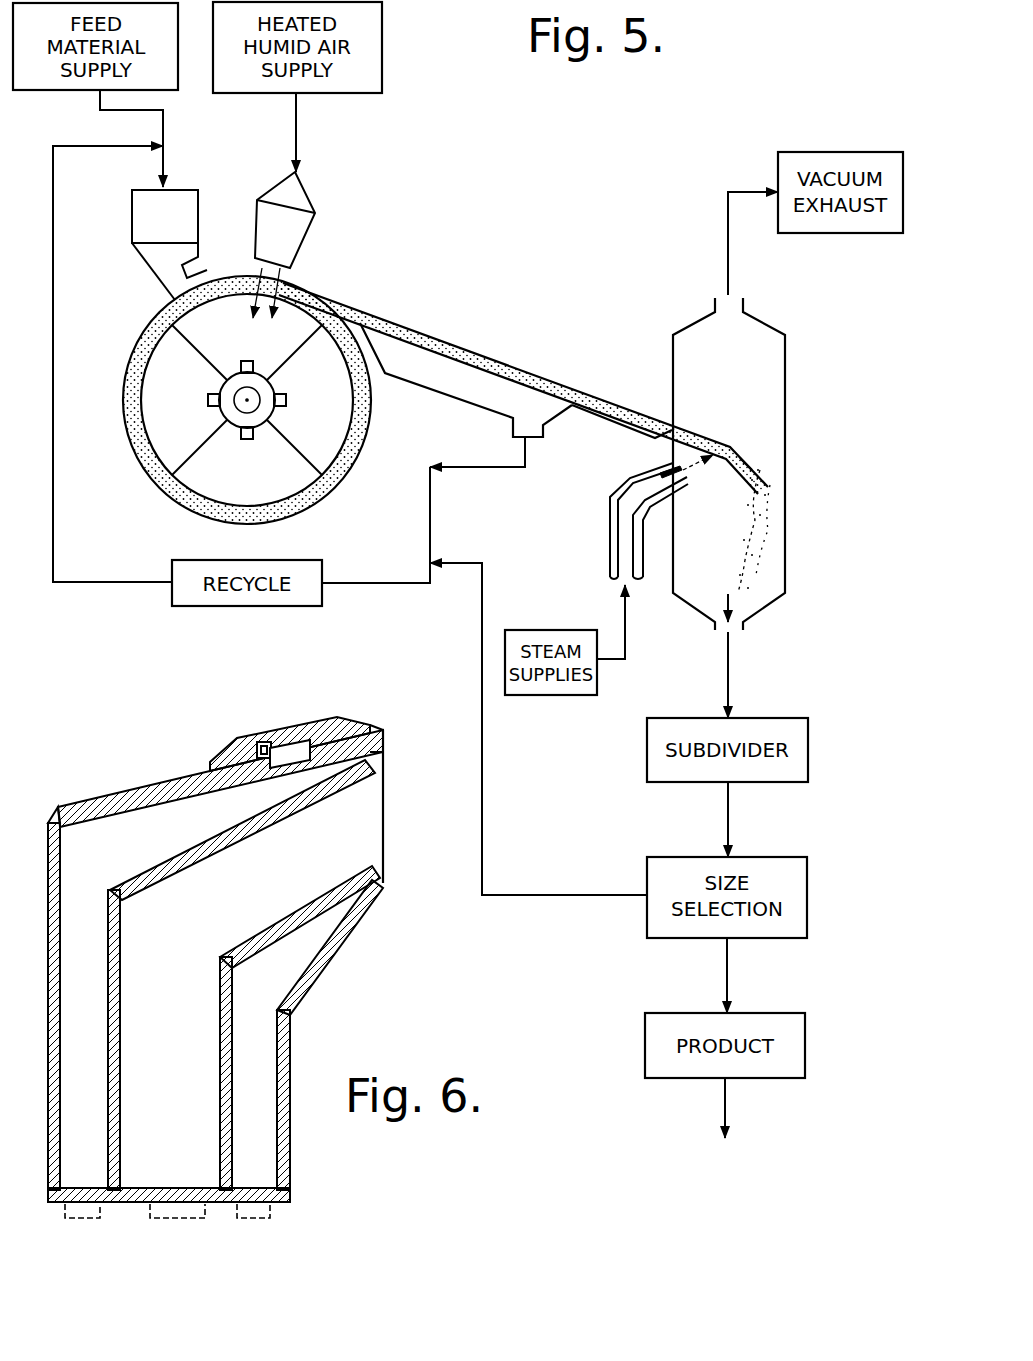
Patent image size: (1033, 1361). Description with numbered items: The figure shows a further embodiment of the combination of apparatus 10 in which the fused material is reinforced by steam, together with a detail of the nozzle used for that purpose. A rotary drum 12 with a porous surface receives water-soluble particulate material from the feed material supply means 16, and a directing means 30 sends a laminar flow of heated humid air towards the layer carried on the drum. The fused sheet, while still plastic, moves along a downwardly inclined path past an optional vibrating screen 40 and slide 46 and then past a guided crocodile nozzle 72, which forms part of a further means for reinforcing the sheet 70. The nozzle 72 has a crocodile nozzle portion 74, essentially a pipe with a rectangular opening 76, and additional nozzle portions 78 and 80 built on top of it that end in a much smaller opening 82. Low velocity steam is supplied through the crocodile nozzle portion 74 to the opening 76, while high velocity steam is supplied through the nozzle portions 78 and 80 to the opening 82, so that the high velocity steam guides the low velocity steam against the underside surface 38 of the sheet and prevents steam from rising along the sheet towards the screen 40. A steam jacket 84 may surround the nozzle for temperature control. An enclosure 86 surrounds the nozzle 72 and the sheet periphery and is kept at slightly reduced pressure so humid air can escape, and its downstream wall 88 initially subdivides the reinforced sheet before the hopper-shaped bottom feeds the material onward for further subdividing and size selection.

In FIG. 5, the combination of apparatus 10 is at (408, 302).
In FIG. 5, the rotary drum 12 is at (182, 497).
In FIG. 5, the feed material supply means 16 is at (130, 243).
In FIG. 5, the directing means 30 is at (316, 213).
In FIG. 5, the underside surface 38 is at (698, 448).
In FIG. 5, the vibrating screen 40 is at (446, 384).
In FIG. 5, the slide 46 is at (603, 420).
In FIG. 5, the means for reinforcing the sheet 70 is at (689, 620).
In FIG. 5, the guided crocodile nozzle 72 is at (607, 530).
In FIG. 6, the guided crocodile nozzle 72 is at (340, 968).
In FIG. 6, the crocodile nozzle portion 74 is at (160, 1041).
In FIG. 5, the opening 76 is at (690, 485).
In FIG. 6, the opening 76 is at (392, 808).
In FIG. 6, the additional nozzle portion 78 is at (70, 1041).
In FIG. 6, the additional nozzle portion 80 is at (307, 750).
In FIG. 5, the opening 82 is at (673, 461).
In FIG. 6, the opening 82 is at (379, 722).
In FIG. 6, the steam jacket 84 is at (245, 1041).
In FIG. 5, the enclosure 86 is at (802, 462).
In FIG. 5, the wall 88 is at (777, 482).